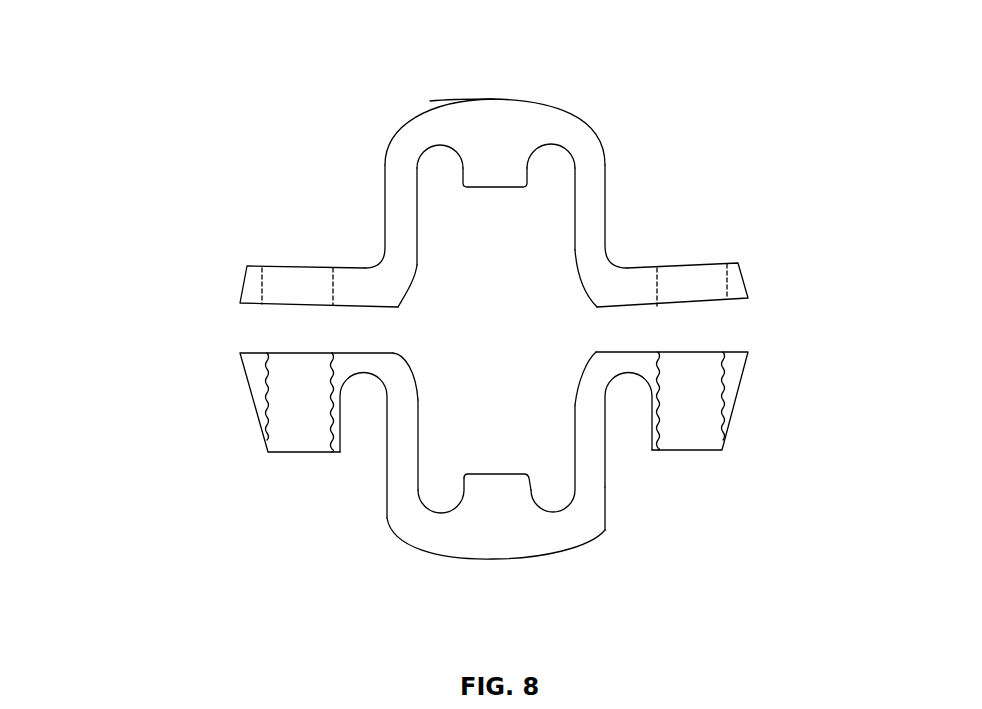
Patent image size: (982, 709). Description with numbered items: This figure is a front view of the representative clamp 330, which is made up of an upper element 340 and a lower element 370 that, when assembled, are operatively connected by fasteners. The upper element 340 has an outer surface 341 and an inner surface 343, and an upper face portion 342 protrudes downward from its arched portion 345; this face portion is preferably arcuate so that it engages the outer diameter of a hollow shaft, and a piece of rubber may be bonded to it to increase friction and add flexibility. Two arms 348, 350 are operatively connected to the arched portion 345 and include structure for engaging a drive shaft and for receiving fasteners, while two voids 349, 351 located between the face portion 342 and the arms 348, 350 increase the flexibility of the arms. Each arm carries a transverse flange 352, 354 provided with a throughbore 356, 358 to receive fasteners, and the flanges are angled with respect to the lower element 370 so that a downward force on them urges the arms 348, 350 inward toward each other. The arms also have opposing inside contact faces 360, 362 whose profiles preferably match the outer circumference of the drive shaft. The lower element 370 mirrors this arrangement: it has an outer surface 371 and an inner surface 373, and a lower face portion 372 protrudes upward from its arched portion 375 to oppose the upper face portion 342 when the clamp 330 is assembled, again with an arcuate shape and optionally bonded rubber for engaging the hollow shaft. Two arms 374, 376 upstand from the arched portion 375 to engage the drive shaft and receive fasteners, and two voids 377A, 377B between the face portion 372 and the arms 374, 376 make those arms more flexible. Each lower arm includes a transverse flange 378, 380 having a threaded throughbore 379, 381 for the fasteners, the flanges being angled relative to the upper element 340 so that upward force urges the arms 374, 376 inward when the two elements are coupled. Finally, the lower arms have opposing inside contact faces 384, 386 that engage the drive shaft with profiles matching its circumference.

The clamp 330 is at (135, 39).
The upper element 340 is at (745, 143).
The outer surface 341 is at (462, 102).
The upper face portion 342 is at (493, 175).
The inner surface 343 is at (573, 195).
The arched portion 345 is at (495, 110).
The arm 348 is at (592, 227).
The void 349 is at (553, 165).
The arm 350 is at (400, 195).
The void 351 is at (435, 165).
The transverse flange 352 is at (738, 284).
The transverse flange 354 is at (253, 285).
The throughbore 356 is at (688, 282).
The throughbore 358 is at (291, 288).
The inside contact face 360 is at (585, 282).
The inside contact face 362 is at (410, 283).
The lower element 370 is at (812, 476).
The outer surface 371 is at (607, 487).
The lower face portion 372 is at (492, 493).
The inner surface 373 is at (420, 420).
The arm 374 is at (596, 463).
The arched portion 375 is at (498, 548).
The arm 376 is at (398, 472).
The void 377A is at (438, 490).
The void 377B is at (553, 490).
The transverse flange 378 is at (733, 398).
The threaded throughbore 379 is at (690, 380).
The transverse flange 380 is at (253, 370).
The threaded throughbore 381 is at (300, 417).
The inside contact face 384 is at (590, 356).
The inside contact face 386 is at (408, 373).